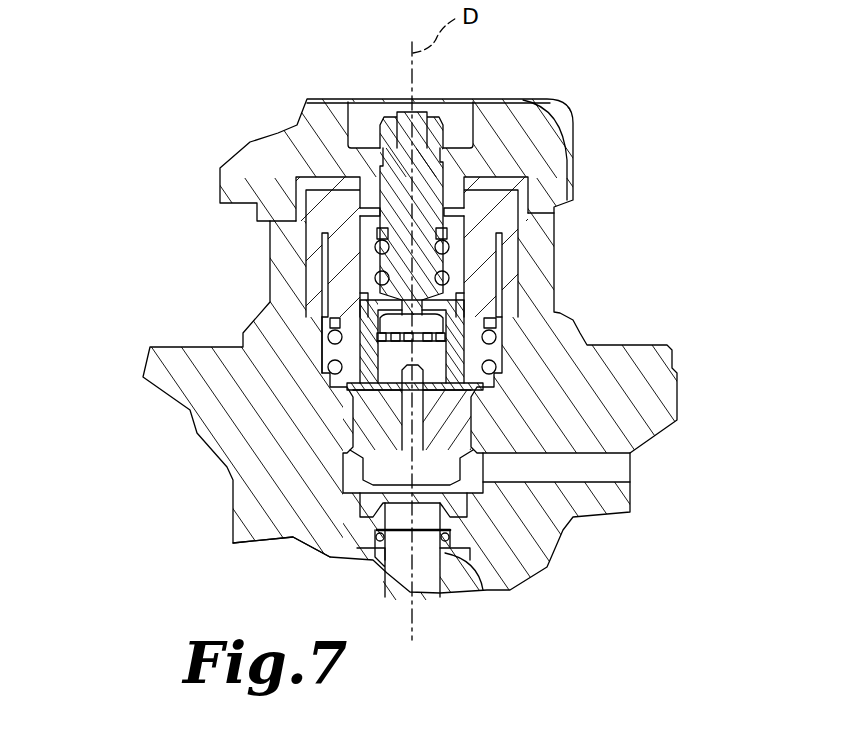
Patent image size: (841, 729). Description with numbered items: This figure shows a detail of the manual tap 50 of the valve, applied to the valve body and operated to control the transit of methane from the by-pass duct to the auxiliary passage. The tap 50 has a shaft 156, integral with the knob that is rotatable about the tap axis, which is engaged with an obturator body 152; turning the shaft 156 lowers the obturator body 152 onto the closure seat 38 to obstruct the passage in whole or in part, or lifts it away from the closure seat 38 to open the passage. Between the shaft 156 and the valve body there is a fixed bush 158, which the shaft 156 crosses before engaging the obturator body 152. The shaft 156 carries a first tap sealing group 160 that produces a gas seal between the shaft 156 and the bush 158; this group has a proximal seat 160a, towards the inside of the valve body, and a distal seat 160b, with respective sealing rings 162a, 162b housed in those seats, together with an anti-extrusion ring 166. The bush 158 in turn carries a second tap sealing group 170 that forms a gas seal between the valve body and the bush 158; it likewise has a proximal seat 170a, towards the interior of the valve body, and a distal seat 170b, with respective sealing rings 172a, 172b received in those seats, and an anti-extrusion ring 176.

The manual tap 50 is at (258, 112).
The obturator body 152 is at (540, 141).
The shaft 156 is at (427, 177).
The fixed bush 158 is at (343, 268).
The first tap sealing group 160 is at (462, 262).
The proximal seat 160a is at (391, 279).
The distal seat 160b is at (394, 247).
The sealing ring 162a is at (444, 278).
The sealing ring 162b is at (455, 250).
The anti-extrusion ring 166 is at (376, 233).
The second tap sealing group 170 is at (353, 344).
The proximal seat 170a is at (344, 369).
The distal seat 170b is at (319, 358).
The sealing ring 172a is at (491, 366).
The sealing ring 172b is at (491, 337).
The anti-extrusion ring 176 is at (344, 338).
The closure seat 38 is at (278, 532).